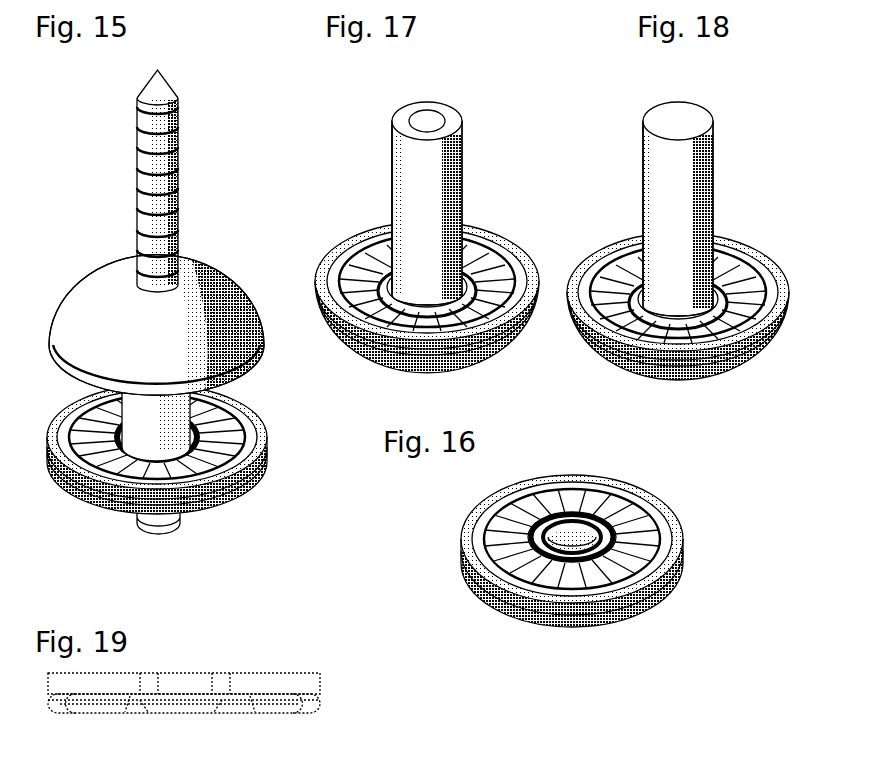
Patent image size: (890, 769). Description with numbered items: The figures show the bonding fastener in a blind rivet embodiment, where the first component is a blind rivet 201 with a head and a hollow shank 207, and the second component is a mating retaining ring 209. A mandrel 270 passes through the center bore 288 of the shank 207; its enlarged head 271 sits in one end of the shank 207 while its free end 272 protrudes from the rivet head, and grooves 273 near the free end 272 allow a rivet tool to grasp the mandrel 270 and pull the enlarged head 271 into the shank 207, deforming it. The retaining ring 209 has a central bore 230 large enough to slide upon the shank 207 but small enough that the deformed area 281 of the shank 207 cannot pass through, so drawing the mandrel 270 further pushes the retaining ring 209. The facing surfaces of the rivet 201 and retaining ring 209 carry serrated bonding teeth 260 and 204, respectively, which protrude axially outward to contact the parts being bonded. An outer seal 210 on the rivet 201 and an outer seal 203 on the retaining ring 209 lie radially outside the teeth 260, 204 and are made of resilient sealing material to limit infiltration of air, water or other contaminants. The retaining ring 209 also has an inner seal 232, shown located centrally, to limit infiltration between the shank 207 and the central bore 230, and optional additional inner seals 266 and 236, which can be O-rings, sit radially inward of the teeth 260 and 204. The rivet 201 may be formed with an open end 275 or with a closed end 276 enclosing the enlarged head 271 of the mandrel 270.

In FIG. 15, the blind rivet 201 is at (85, 307).
In FIG. 17, the blind rivet 201 is at (460, 367).
In FIG. 18, the blind rivet 201 is at (633, 372).
In FIG. 15, the outer seal 203 is at (252, 470).
In FIG. 16, the outer seal 203 is at (680, 527).
In FIG. 19, the outer seal 203 is at (307, 707).
In FIG. 15, the serrated bonding teeth 204 is at (92, 422).
In FIG. 16, the serrated bonding teeth 204 is at (653, 532).
In FIG. 19, the serrated bonding teeth 204 is at (173, 700).
In FIG. 15, the shank 207 is at (158, 417).
In FIG. 17, the shank 207 is at (462, 150).
In FIG. 18, the shank 207 is at (713, 160).
In FIG. 15, the retaining ring 209 is at (197, 503).
In FIG. 16, the retaining ring 209 is at (680, 568).
In FIG. 19, the retaining ring 209 is at (293, 680).
In FIG. 17, the outer seal 210 is at (497, 328).
In FIG. 18, the outer seal 210 is at (725, 367).
In FIG. 16, the central bore 230 is at (578, 548).
In FIG. 19, the central bore 230 is at (178, 673).
In FIG. 16, the inner seal 232 is at (578, 528).
In FIG. 19, the inner seal 232 is at (218, 680).
In FIG. 15, the inner seal 236 is at (88, 427).
In FIG. 16, the inner seal 236 is at (528, 553).
In FIG. 19, the inner seal 236 is at (145, 702).
In FIG. 17, the serrated bonding teeth 260 is at (503, 265).
In FIG. 18, the serrated bonding teeth 260 is at (750, 267).
In FIG. 17, the inner seal 266 is at (345, 245).
In FIG. 18, the inner seal 266 is at (632, 283).
In FIG. 15, the mandrel 270 is at (153, 160).
In FIG. 15, the enlarged head 271 is at (140, 528).
In FIG. 15, the free end 272 is at (160, 72).
In FIG. 15, the grooves 273 is at (175, 145).
In FIG. 17, the open end 275 is at (397, 127).
In FIG. 18, the closed end 276 is at (693, 115).
In FIG. 17, the deformed area 281 is at (390, 152).
In FIG. 18, the deformed area 281 is at (643, 193).
In FIG. 17, the center bore 288 is at (432, 118).